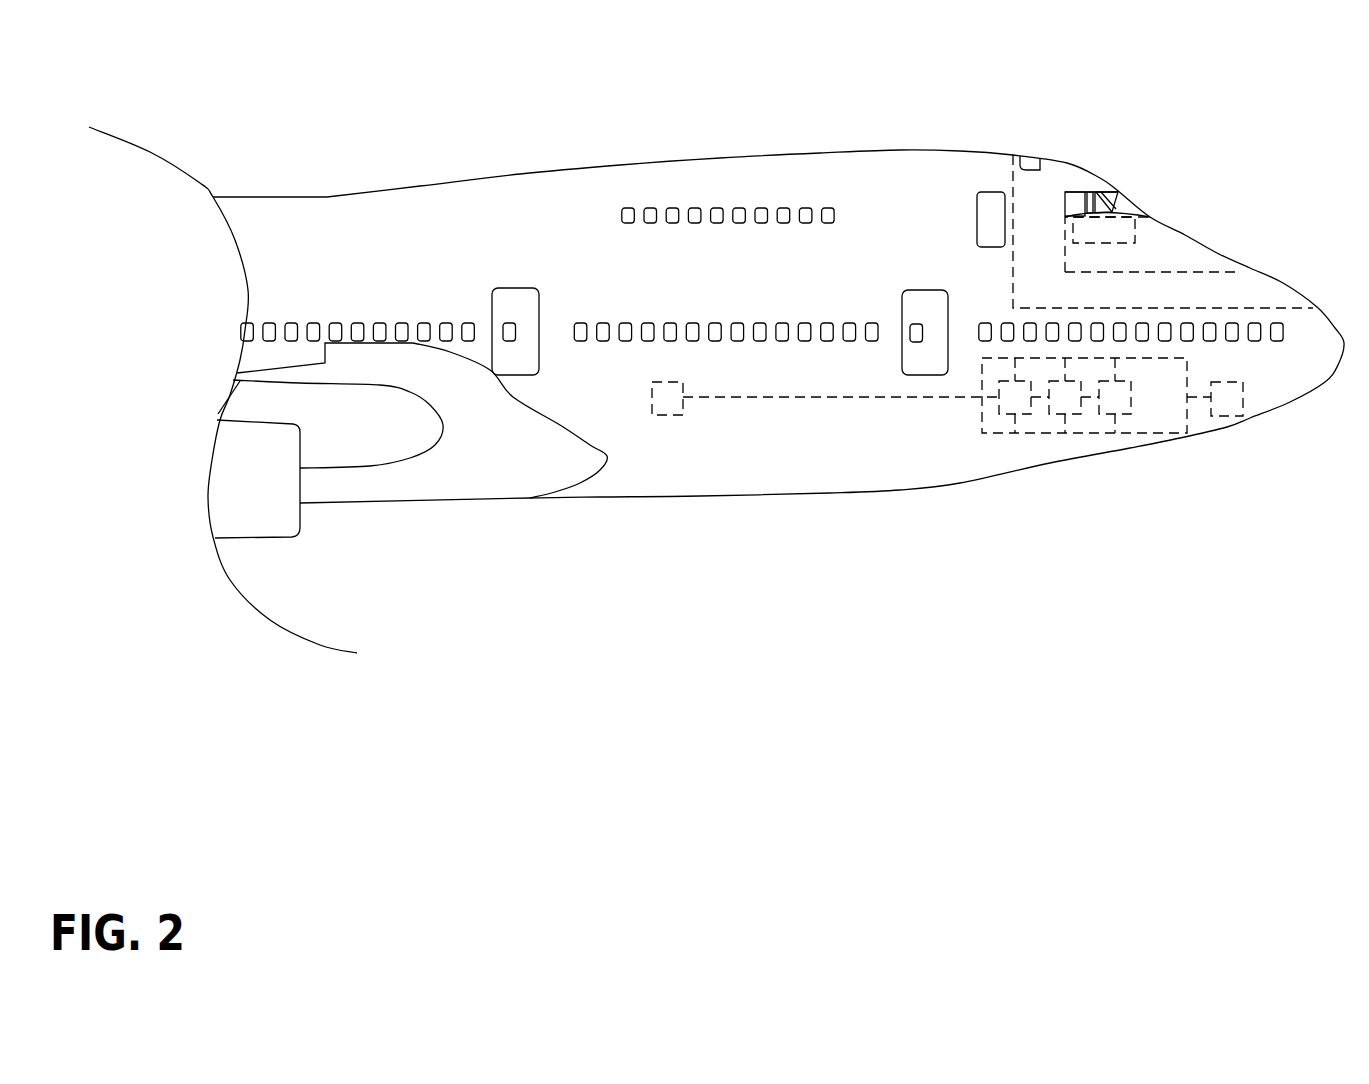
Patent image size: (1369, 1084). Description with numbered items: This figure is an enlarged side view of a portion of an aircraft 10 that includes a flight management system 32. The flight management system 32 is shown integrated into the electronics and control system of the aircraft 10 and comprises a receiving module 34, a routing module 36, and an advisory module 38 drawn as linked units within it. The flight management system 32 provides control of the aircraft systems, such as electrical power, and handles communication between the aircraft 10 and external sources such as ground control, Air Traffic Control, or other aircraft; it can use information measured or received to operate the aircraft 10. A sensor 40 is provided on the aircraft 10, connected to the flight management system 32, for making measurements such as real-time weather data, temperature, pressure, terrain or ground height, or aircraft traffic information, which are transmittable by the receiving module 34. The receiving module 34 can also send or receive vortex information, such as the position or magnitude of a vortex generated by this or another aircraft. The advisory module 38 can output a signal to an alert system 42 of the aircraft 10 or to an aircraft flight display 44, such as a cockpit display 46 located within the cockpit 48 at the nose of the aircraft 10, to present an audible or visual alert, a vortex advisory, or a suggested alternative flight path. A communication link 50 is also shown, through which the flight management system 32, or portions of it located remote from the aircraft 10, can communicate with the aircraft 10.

The aircraft 10 is at (930, 133).
The flight management system 32 is at (992, 440).
The receiving module 34 is at (1017, 436).
The routing module 36 is at (1067, 436).
The advisory module 38 is at (1117, 436).
The sensor 40 is at (667, 418).
The alert system 42 is at (1203, 282).
The aircraft flight display 44 is at (1125, 254).
The cockpit display 46 is at (1098, 240).
The cockpit 48 is at (1013, 190).
The communication link 50 is at (1227, 418).